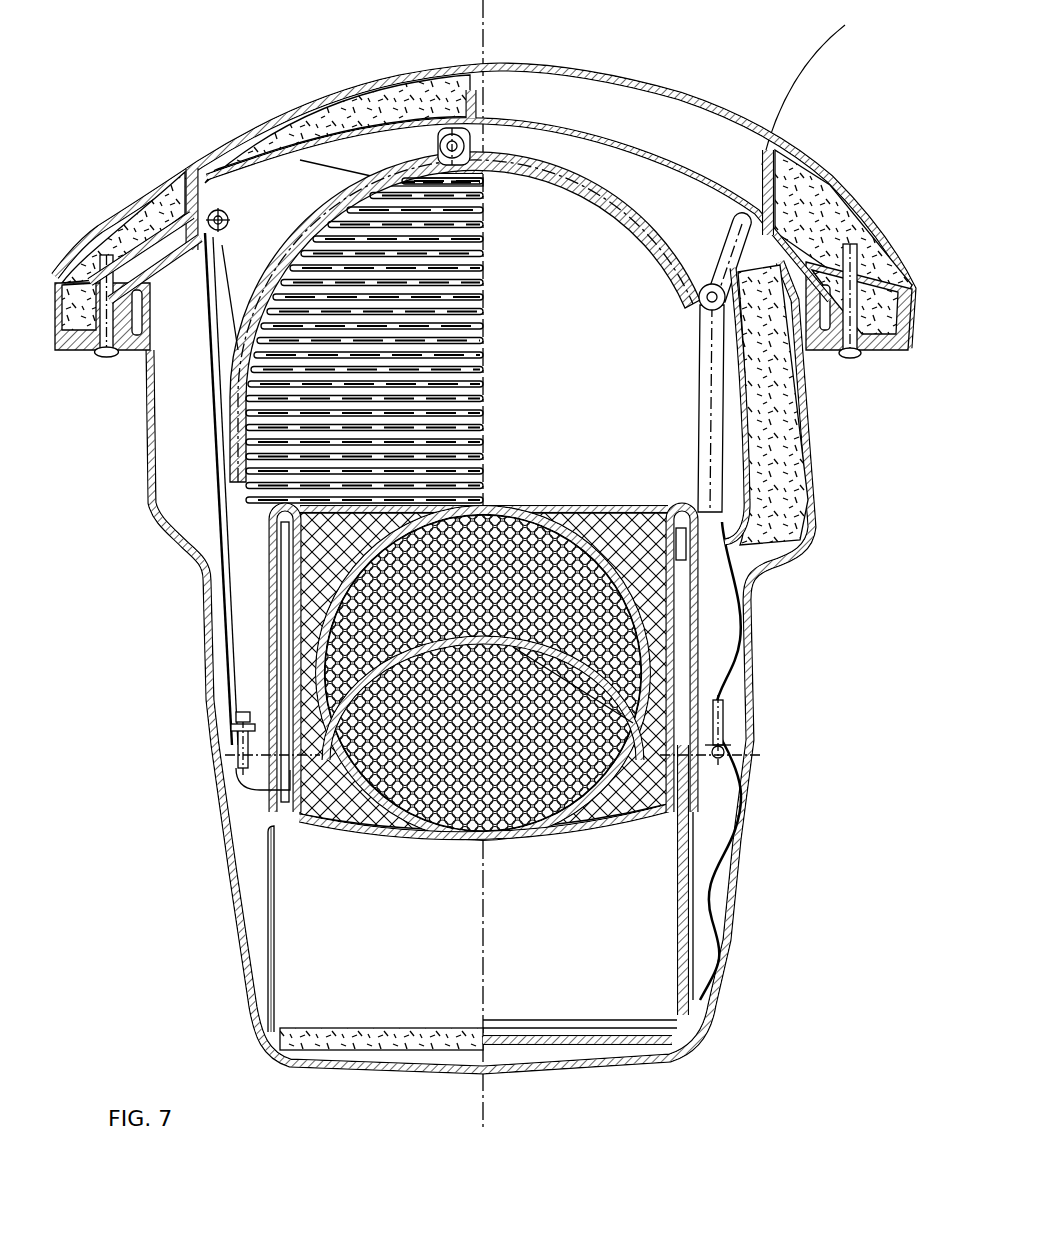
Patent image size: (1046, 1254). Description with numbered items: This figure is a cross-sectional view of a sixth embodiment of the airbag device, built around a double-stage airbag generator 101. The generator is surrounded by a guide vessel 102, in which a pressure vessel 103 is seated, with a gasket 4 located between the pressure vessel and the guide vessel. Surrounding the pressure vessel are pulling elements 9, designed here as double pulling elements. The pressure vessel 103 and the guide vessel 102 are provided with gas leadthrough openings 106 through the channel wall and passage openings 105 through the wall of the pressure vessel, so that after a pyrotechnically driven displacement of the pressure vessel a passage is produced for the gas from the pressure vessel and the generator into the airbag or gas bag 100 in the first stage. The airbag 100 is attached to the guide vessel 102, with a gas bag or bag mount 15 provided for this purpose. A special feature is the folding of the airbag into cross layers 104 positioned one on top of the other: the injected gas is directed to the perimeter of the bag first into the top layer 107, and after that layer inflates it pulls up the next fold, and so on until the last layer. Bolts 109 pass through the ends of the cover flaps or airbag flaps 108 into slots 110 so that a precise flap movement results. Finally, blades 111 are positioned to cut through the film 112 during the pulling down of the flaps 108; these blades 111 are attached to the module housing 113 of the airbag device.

The gasket 4 is at (277, 590).
The pulling elements 9 is at (224, 408).
The gas bag or bag mount 15 is at (222, 711).
The airbag or gas bag 100 is at (432, 304).
The double-stage airbag generator 101 is at (520, 551).
The guide vessel 102 is at (273, 961).
The pressure vessel 103 is at (340, 831).
The cross layers 104 is at (433, 343).
The passage openings 105 is at (285, 548).
The gas leadthrough openings 106 is at (243, 705).
The top layer 107 is at (471, 178).
The cover flaps or airbag flaps 108 is at (268, 134).
The bolts 109 is at (462, 128).
The slots 110 is at (287, 248).
The blades 111 is at (180, 164).
The film 112 is at (388, 78).
The module housing 113 is at (150, 402).